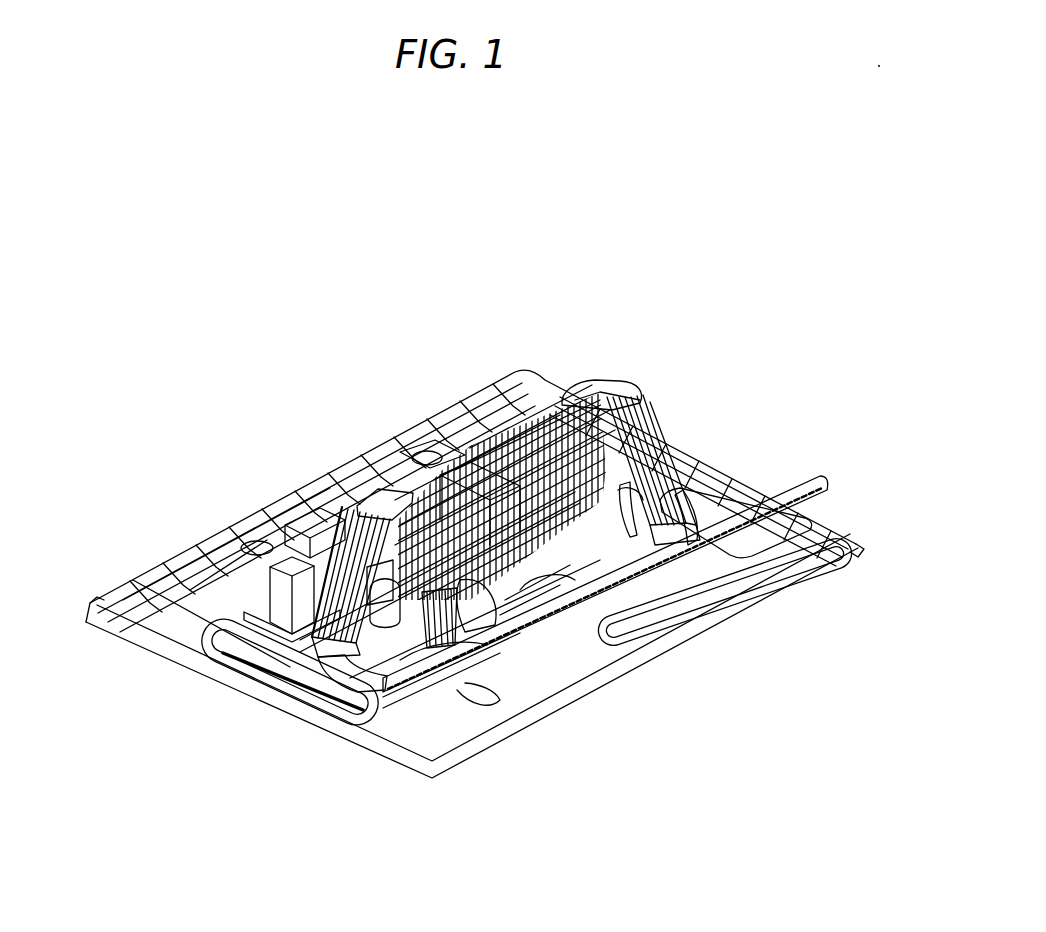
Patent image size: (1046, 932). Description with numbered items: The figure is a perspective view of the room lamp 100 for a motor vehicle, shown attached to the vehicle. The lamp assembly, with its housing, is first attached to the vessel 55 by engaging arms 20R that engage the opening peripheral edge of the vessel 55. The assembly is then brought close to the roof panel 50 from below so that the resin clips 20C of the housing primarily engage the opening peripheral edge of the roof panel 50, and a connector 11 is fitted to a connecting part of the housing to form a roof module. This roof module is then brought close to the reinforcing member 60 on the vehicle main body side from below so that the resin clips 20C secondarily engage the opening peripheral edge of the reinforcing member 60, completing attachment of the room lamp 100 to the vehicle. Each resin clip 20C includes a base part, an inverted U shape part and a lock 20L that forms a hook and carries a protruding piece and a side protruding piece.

The room lamp 100 is at (678, 382).
The roof panel 50 is at (122, 640).
The vessel 55 is at (197, 650).
The resin clip 20C is at (312, 697).
The engaging arm 20R is at (353, 700).
The lock 20L is at (487, 625).
The reinforcing member 60 is at (607, 387).
The connector 11 is at (621, 637).